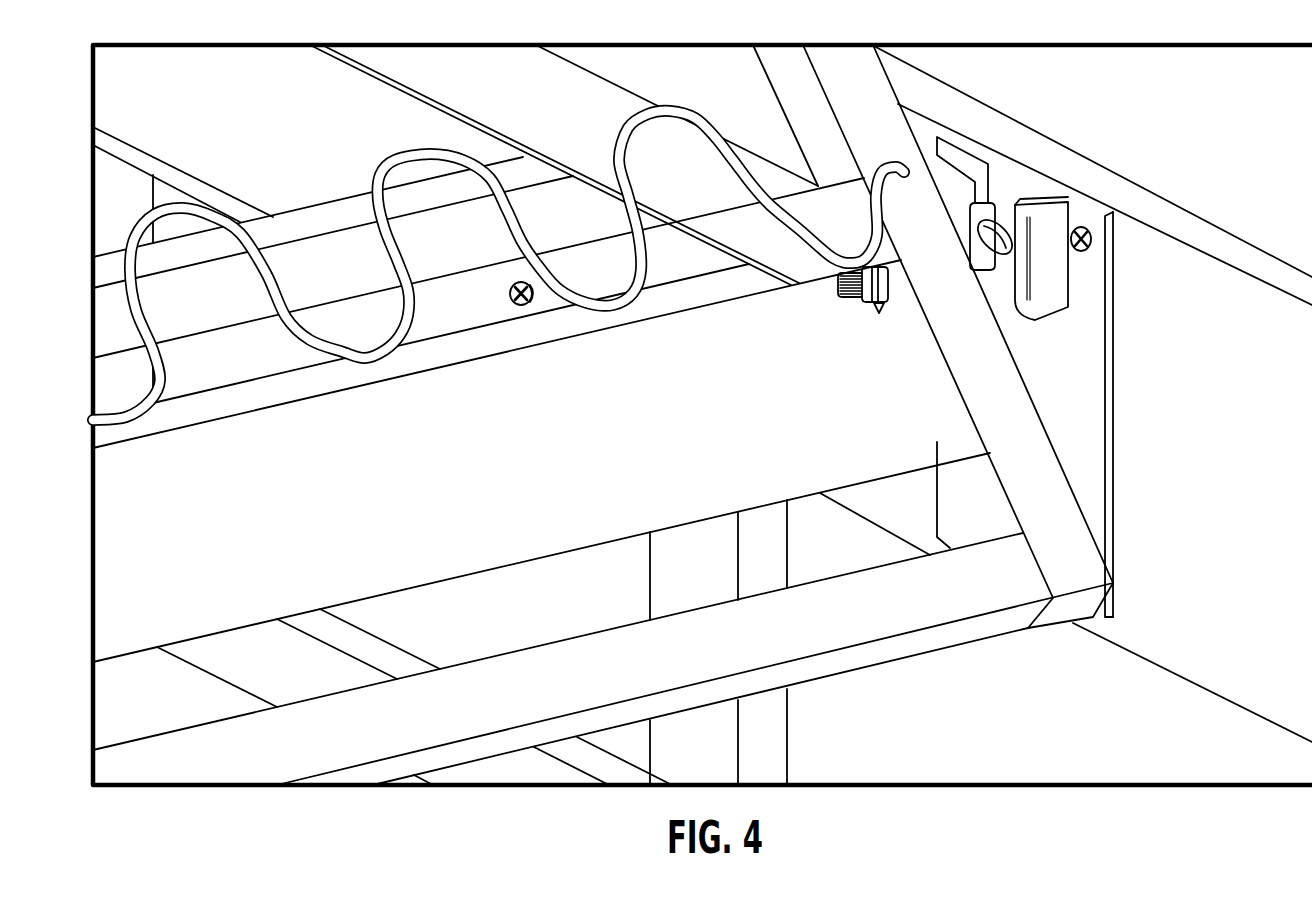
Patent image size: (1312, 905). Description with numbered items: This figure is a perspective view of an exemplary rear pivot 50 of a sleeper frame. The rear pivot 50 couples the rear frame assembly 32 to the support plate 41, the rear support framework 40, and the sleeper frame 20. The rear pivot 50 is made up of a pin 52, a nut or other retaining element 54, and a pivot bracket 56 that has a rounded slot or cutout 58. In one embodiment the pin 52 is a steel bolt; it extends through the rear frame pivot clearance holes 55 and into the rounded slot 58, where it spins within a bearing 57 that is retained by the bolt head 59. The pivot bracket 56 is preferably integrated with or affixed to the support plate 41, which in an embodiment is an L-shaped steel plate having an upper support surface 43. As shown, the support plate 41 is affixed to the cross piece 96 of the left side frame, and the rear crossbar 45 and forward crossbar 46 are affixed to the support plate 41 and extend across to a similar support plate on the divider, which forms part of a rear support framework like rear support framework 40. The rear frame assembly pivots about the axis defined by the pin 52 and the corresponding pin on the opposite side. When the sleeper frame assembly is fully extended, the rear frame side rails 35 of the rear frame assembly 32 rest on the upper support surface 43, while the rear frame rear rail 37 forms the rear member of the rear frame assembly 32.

The sleeper frame 20 is at (1083, 438).
The rear frame assembly 32 is at (960, 592).
The rear frame side rail 35 is at (870, 117).
The rear frame rear rail 37 is at (905, 643).
The rear support framework 40 is at (1083, 327).
The support plate 41 is at (1083, 382).
The upper support surface 43 is at (609, 102).
The rear crossbar 45 is at (480, 547).
The forward crossbar 46 is at (200, 309).
The rear pivot 50 is at (834, 348).
The pin 52 is at (840, 286).
The nut or other retaining element 54 is at (893, 290).
The rear frame pivot clearance holes 55 is at (879, 312).
The pivot bracket 56 is at (1060, 223).
The bearing 57 is at (1000, 228).
The rounded slot or cutout 58 is at (985, 212).
The bolt head 59 is at (1005, 227).
The cross piece 96 is at (1173, 222).